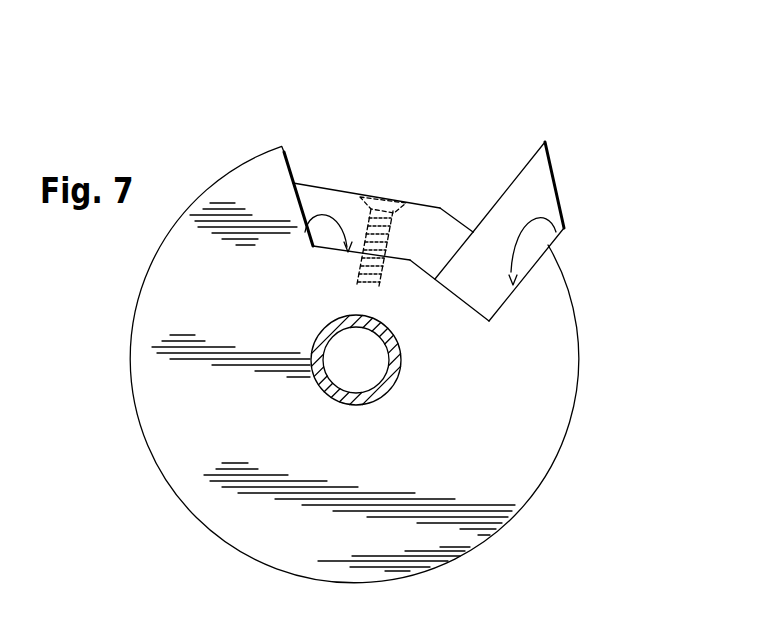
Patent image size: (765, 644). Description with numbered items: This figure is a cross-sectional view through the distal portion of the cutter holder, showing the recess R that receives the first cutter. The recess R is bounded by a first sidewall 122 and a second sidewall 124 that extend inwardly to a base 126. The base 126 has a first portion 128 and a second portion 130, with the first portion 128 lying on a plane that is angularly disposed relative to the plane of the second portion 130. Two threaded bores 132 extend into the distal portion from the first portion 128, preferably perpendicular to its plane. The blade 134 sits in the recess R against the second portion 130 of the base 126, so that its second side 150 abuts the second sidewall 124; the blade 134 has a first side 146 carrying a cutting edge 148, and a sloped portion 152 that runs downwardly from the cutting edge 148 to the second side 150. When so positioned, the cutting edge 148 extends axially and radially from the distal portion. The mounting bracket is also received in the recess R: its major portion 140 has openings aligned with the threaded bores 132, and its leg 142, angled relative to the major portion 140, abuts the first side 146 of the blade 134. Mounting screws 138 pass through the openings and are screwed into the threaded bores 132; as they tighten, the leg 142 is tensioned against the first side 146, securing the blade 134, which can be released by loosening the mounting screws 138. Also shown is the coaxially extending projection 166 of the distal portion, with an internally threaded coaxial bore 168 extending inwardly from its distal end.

The first sidewall 122 is at (290, 156).
The second sidewall 124 is at (556, 232).
The base 126 is at (306, 234).
The first portion 128 is at (373, 265).
The second portion 130 is at (468, 310).
The threaded bores 132 is at (432, 228).
The blade 134 is at (598, 133).
The mounting screws 138 is at (370, 198).
The major portion 140 is at (331, 198).
The leg 142 is at (452, 230).
The first side 146 is at (492, 203).
The cutting edge 148 is at (545, 139).
The second side 150 is at (508, 300).
The sloped portion 152 is at (566, 207).
The projection 166 is at (378, 400).
The internally threaded coaxial bore 168 is at (351, 360).
The recess R is at (421, 113).